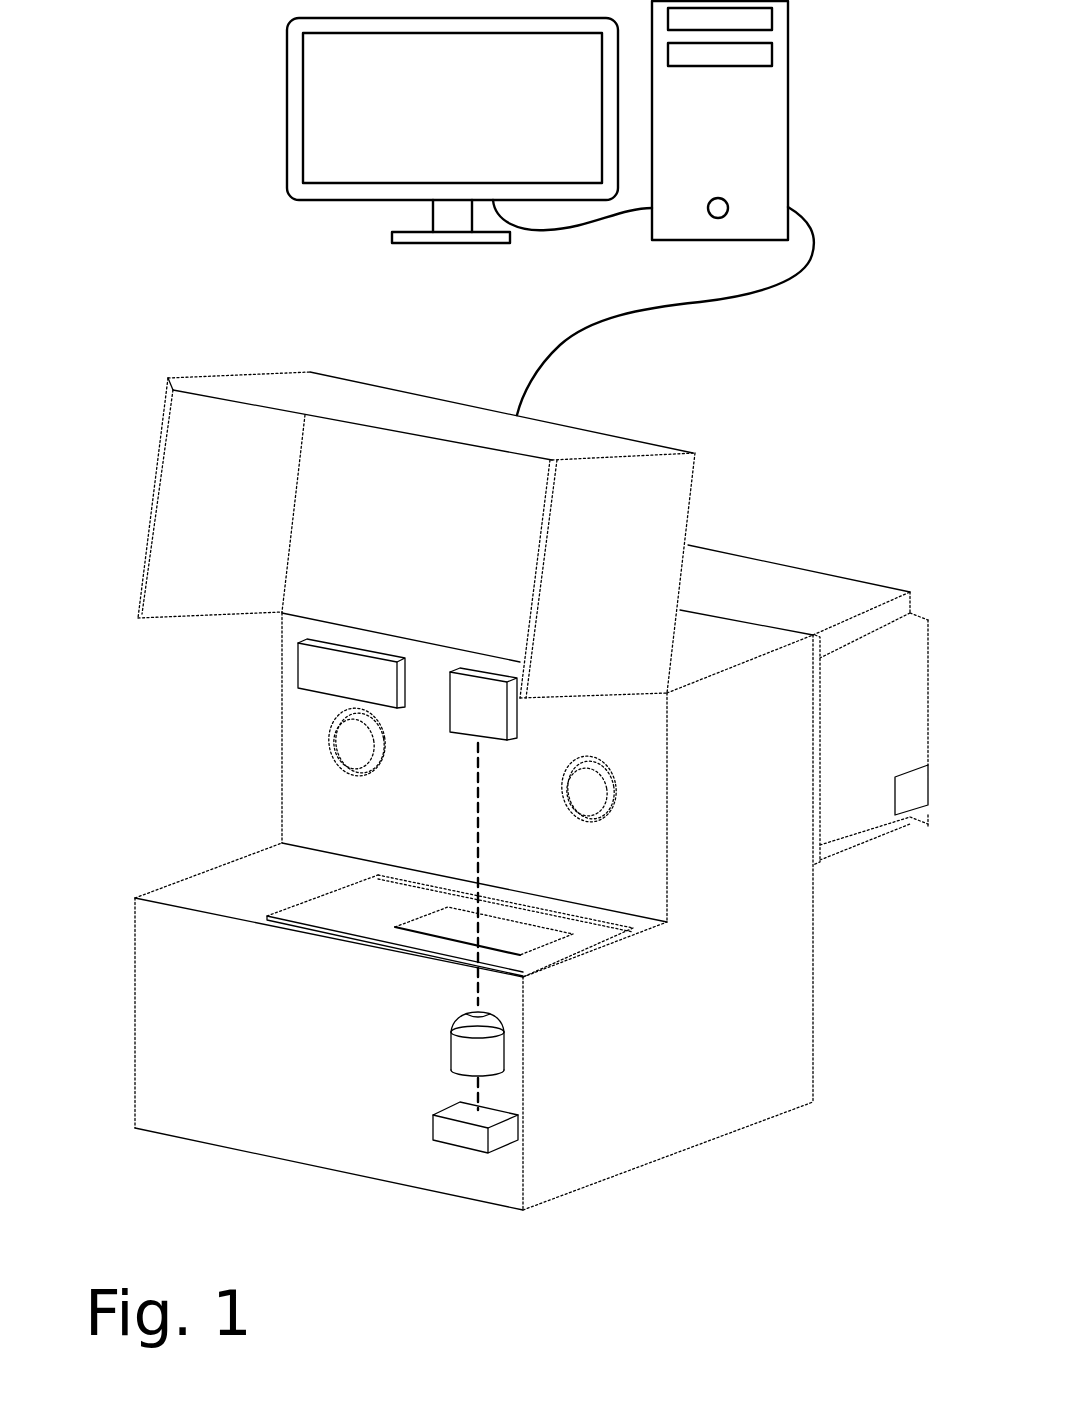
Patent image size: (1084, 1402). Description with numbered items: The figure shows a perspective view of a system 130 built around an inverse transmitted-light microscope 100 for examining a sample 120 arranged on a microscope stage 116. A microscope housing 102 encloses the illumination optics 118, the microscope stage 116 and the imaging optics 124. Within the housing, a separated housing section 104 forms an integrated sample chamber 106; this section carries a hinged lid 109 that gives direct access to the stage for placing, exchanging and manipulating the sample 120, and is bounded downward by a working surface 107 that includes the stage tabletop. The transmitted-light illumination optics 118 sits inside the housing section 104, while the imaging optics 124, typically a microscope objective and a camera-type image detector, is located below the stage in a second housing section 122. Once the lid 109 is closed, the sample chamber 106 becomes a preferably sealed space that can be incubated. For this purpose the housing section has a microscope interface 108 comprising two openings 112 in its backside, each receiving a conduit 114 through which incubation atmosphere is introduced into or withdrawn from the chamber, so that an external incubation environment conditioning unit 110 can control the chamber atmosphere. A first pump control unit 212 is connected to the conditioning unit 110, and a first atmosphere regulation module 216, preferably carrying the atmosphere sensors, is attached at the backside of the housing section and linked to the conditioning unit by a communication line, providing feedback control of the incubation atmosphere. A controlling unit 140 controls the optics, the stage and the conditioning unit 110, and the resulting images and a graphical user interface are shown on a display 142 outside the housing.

The microscope 100 is at (173, 695).
The microscope housing 102 is at (491, 1039).
The separated housing section 104 is at (474, 856).
The sample chamber 106 is at (627, 893).
The working surface 107 is at (213, 893).
The microscope interface 108 is at (482, 752).
The lid 109 is at (667, 477).
The incubation environment conditioning unit 110 is at (828, 718).
The opening 112 is at (360, 773).
The conduit 114 is at (352, 737).
The microscope stage 116 is at (450, 952).
The illumination optics 118 is at (498, 688).
The sample 120 is at (440, 927).
The second housing section 122 is at (208, 1130).
The imaging optics 124 is at (510, 1083).
The system 130 is at (553, 239).
The controlling unit 140 is at (778, 107).
The display 142 is at (300, 130).
The first pump control unit 212 is at (912, 800).
The first atmosphere regulation module 216 is at (382, 672).